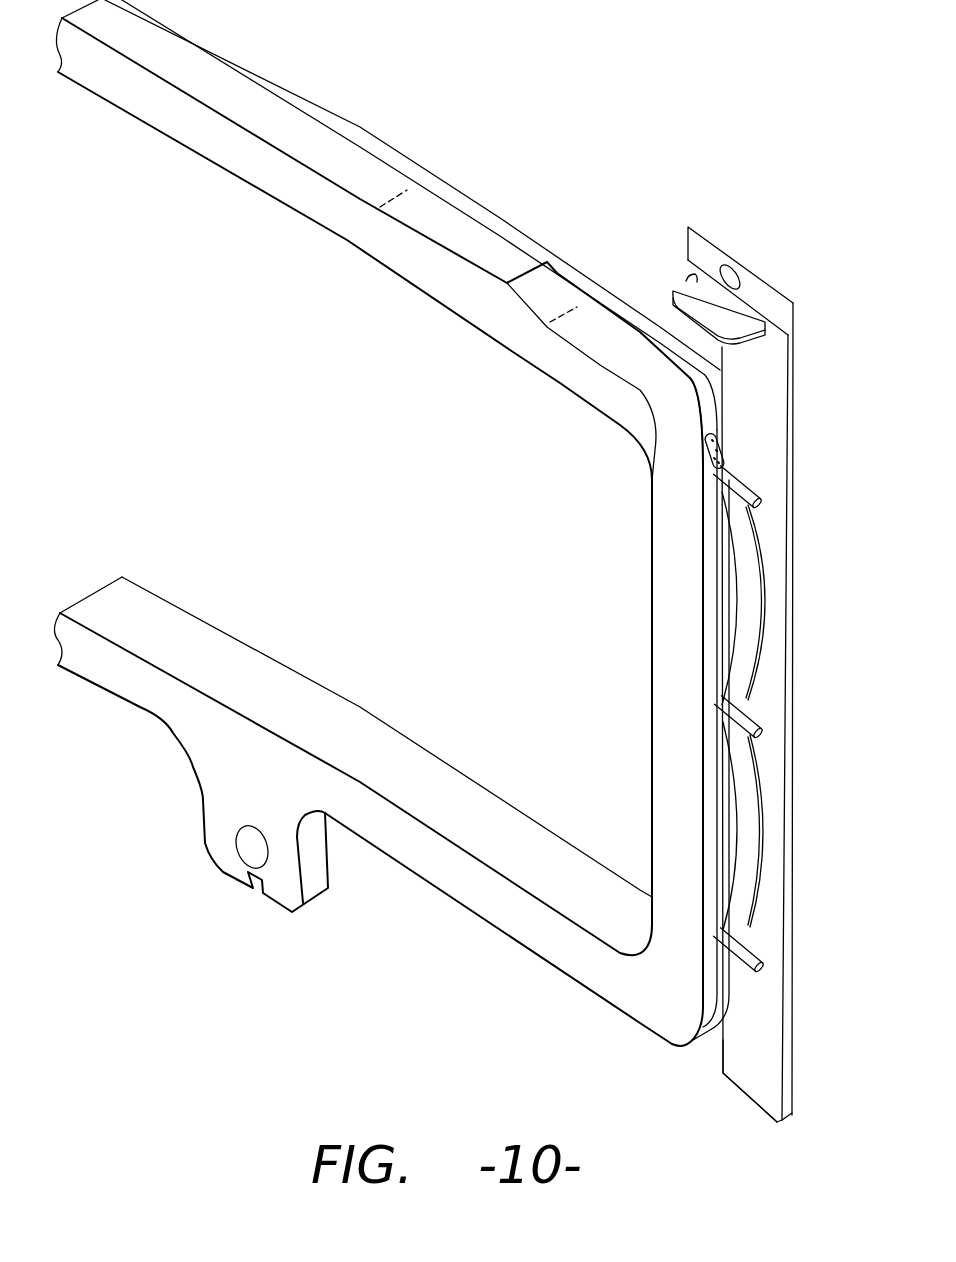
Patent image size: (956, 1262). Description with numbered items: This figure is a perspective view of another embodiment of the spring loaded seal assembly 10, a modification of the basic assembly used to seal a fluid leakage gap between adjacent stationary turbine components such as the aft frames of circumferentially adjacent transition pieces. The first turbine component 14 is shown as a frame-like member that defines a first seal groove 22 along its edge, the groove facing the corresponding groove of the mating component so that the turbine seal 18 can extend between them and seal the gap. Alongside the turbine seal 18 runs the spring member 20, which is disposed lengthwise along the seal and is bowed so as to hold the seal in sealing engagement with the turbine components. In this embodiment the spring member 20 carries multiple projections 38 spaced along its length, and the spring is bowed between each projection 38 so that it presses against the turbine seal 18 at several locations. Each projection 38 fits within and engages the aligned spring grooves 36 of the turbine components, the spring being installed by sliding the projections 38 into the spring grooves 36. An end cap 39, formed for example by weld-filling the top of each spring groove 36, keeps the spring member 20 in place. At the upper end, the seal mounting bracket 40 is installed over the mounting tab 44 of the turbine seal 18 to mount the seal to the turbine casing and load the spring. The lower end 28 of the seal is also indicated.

The spring loaded seal assembly 10 is at (802, 456).
The first turbine component 14 is at (487, 243).
The turbine seal 18 is at (792, 1015).
The spring member 20 is at (762, 636).
The first seal groove 22 is at (713, 409).
The lower end of strip 28 is at (743, 1072).
The spring groove 36 is at (720, 613).
The projection 38 is at (760, 508).
The end cap 39 is at (703, 447).
The seal mounting bracket 40 is at (763, 278).
The mounting tab 44 is at (672, 292).